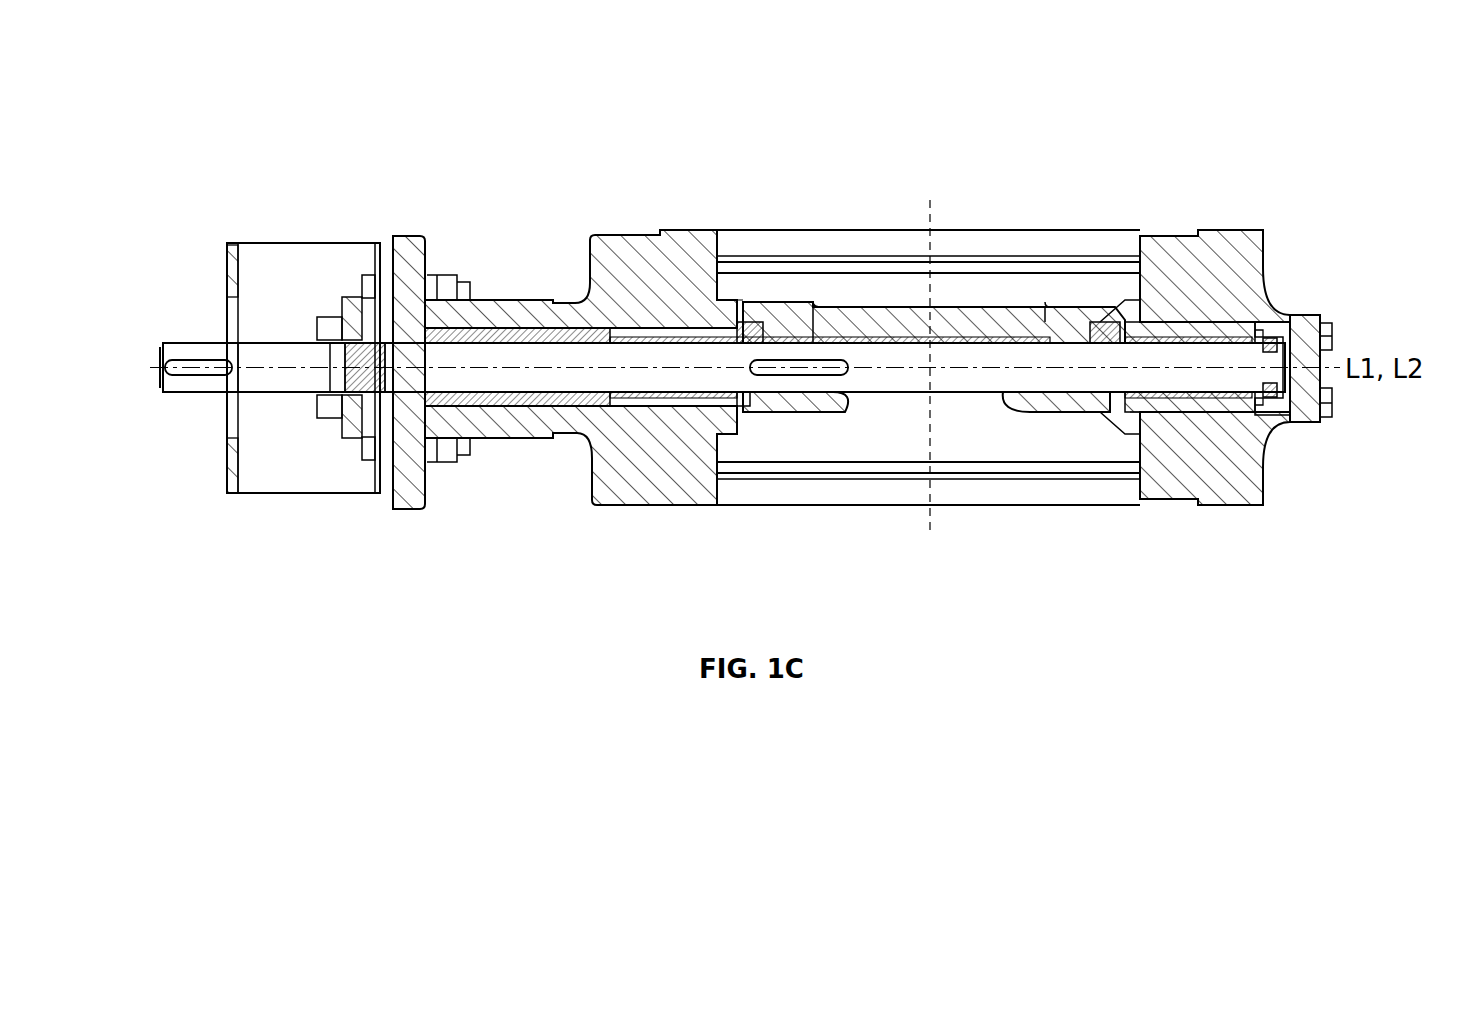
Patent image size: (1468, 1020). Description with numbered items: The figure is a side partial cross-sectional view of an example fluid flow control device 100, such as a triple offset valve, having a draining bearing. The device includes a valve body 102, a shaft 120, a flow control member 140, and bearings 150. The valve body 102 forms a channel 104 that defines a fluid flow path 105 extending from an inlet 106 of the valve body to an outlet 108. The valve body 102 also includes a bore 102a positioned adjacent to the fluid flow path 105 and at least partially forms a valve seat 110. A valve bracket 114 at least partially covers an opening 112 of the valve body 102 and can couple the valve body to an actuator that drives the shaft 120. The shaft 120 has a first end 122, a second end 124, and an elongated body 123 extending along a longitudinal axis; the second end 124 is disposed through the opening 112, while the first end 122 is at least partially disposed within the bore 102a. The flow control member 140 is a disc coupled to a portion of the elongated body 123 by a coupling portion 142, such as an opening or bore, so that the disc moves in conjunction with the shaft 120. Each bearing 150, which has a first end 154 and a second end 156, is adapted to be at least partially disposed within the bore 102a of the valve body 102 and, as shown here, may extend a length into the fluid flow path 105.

The fluid flow control device 100 is at (200, 100).
The valve body 102 is at (1195, 255).
The bore 102a is at (657, 440).
The channel 104 is at (1007, 455).
The fluid flow path 105 is at (890, 440).
The inlet 106 is at (1055, 513).
The outlet 108 is at (797, 215).
The valve seat 110 is at (775, 300).
The opening 112 is at (412, 383).
The valve bracket 114 is at (386, 245).
The shaft 120 is at (178, 398).
The first end 122 is at (1270, 425).
The elongated body 123 is at (945, 357).
The second end 124 is at (150, 340).
The flow control member 140 is at (1033, 318).
The coupling portion 142 is at (832, 393).
The bearing 150 is at (640, 412).
The first end 154 is at (640, 335).
The second end 156 is at (742, 410).